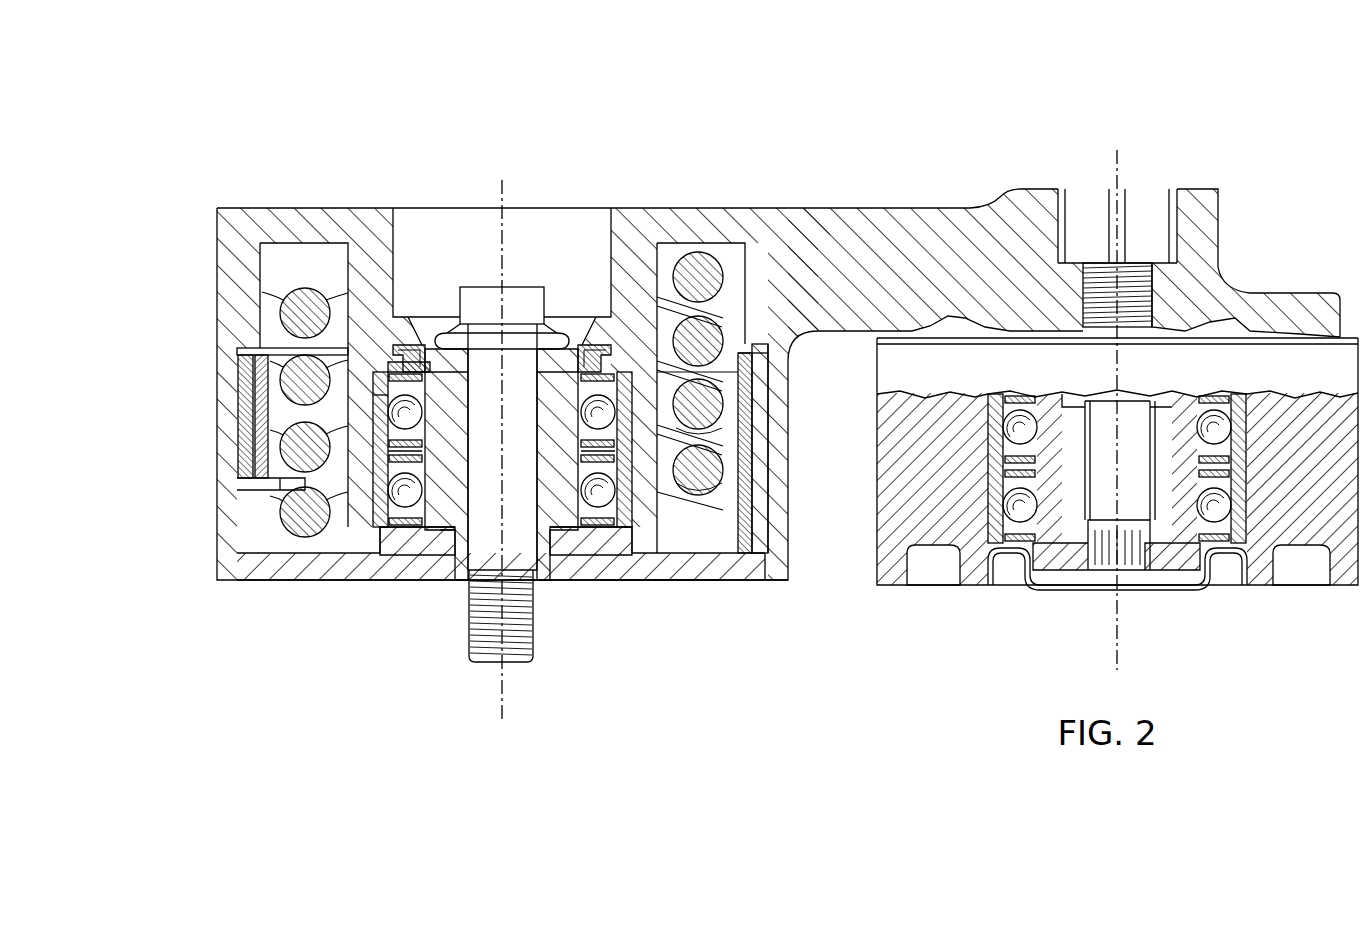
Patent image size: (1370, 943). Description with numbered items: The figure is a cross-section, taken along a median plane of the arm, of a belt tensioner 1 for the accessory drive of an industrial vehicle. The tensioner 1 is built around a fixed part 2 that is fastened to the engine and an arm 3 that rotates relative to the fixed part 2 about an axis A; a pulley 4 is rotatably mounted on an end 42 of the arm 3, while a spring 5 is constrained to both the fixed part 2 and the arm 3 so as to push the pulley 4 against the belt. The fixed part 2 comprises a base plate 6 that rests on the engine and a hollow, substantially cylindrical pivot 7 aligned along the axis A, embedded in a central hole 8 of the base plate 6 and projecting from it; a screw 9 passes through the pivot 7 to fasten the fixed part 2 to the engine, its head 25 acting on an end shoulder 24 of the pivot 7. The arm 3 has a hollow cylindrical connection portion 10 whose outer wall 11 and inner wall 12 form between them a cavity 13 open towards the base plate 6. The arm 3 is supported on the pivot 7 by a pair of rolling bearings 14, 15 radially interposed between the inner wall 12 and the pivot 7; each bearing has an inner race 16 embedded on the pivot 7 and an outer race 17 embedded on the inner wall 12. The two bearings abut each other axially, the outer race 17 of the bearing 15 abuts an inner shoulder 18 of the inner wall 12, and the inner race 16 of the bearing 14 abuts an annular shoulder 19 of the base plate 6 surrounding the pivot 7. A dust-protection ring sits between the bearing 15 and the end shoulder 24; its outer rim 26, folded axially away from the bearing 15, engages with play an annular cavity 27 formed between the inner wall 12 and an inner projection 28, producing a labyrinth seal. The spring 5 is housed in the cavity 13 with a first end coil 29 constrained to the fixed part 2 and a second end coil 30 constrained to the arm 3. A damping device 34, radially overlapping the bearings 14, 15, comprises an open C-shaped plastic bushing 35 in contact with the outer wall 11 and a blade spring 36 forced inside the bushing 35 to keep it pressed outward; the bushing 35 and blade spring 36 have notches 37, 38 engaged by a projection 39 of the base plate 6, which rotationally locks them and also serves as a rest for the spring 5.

The tensioner 1 is at (524, 140).
The fixed part 2 is at (660, 594).
The arm 3 is at (822, 200).
The pulley 4 is at (1333, 586).
The spring 5 is at (709, 500).
The base plate 6 is at (310, 558).
The pivot 7 is at (558, 520).
The central hole 8 is at (472, 549).
The screw 9 is at (520, 632).
The connection portion 10 is at (285, 215).
The outer wall 11 is at (222, 483).
The inner wall 12 is at (702, 442).
The cavity 13 is at (272, 268).
The rolling bearing 14 is at (430, 542).
The rolling bearing 15 is at (645, 373).
The inner race 16 is at (574, 413).
The outer race 17 is at (373, 430).
The inner shoulder 18 is at (375, 396).
The annular shoulder 19 is at (447, 533).
The end shoulder 24 is at (546, 372).
The head 25 is at (520, 302).
The outer rim 26 is at (589, 352).
The annular cavity 27 is at (404, 352).
The inner projection 28 is at (432, 360).
The first end coil 29 is at (340, 545).
The second end coil 30 is at (670, 258).
The damping device 34 is at (782, 500).
The bushing 35 is at (756, 383).
The blade spring 36 is at (746, 413).
The notch 37 is at (245, 504).
The notch 38 is at (262, 495).
The projection 39 is at (247, 495).
The end 42 is at (1196, 291).
The axis A is at (502, 680).